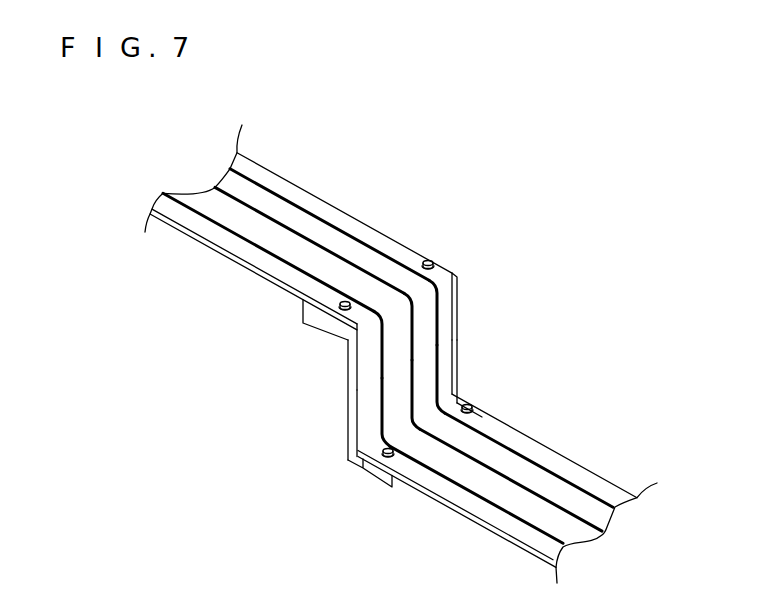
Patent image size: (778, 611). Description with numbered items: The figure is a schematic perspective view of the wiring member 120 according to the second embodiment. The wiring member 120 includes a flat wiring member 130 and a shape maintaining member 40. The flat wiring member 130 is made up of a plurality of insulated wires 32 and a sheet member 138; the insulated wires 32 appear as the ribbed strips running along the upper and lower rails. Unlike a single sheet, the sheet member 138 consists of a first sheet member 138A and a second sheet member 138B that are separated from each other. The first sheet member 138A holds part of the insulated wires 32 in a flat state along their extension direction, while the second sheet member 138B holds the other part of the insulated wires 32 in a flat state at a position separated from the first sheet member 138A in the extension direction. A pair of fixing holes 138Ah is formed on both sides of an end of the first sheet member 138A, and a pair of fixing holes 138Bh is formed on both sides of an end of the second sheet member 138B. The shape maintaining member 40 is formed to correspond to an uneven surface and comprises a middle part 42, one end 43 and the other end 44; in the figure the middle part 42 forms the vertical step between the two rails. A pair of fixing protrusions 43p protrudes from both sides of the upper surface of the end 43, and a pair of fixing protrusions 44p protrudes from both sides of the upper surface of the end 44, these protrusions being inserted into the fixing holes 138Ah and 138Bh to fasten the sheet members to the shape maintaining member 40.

The wiring member 120 is at (305, 114).
The flat wiring member 130 is at (345, 204).
The insulated wires 32 is at (549, 528).
The sheet member 138 is at (588, 265).
The first sheet member 138A is at (457, 267).
The second sheet member 138B is at (530, 437).
The fixing holes 138Ah is at (444, 266).
The fixing holes 138Bh is at (473, 415).
The shape maintaining member 40 is at (298, 309).
The middle part 42 is at (346, 424).
The one end 43 is at (310, 321).
The fixing protrusions 43p is at (424, 258).
The other end 44 is at (372, 480).
The fixing protrusions 44p is at (465, 403).